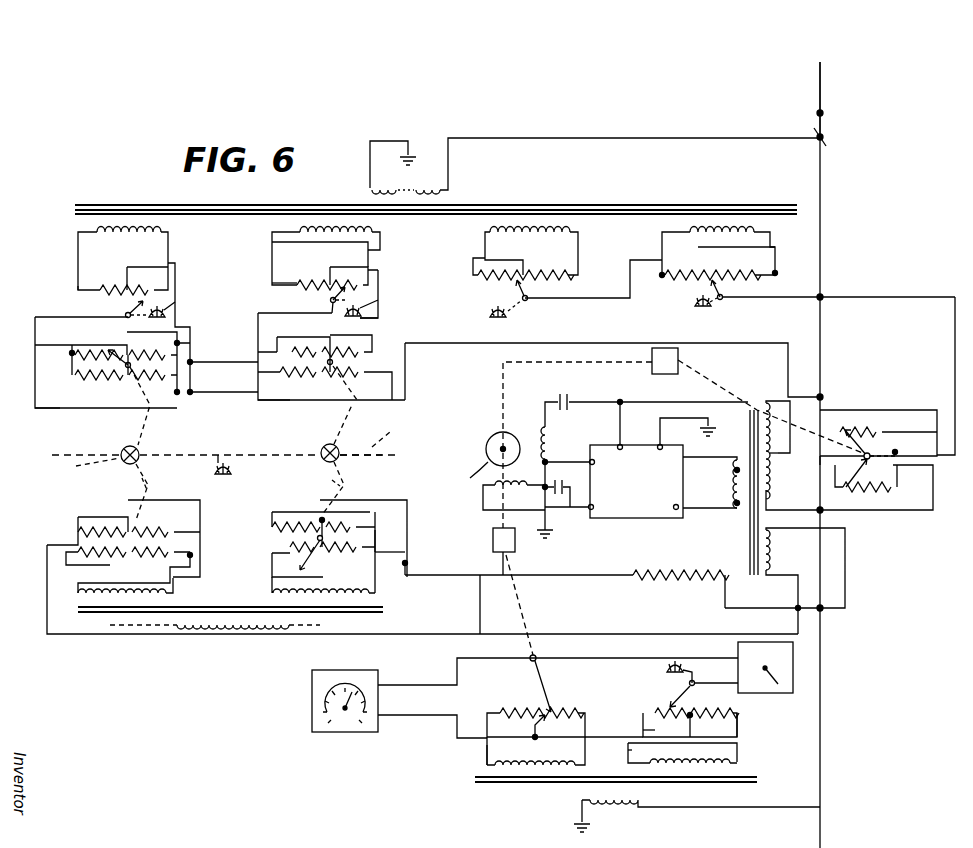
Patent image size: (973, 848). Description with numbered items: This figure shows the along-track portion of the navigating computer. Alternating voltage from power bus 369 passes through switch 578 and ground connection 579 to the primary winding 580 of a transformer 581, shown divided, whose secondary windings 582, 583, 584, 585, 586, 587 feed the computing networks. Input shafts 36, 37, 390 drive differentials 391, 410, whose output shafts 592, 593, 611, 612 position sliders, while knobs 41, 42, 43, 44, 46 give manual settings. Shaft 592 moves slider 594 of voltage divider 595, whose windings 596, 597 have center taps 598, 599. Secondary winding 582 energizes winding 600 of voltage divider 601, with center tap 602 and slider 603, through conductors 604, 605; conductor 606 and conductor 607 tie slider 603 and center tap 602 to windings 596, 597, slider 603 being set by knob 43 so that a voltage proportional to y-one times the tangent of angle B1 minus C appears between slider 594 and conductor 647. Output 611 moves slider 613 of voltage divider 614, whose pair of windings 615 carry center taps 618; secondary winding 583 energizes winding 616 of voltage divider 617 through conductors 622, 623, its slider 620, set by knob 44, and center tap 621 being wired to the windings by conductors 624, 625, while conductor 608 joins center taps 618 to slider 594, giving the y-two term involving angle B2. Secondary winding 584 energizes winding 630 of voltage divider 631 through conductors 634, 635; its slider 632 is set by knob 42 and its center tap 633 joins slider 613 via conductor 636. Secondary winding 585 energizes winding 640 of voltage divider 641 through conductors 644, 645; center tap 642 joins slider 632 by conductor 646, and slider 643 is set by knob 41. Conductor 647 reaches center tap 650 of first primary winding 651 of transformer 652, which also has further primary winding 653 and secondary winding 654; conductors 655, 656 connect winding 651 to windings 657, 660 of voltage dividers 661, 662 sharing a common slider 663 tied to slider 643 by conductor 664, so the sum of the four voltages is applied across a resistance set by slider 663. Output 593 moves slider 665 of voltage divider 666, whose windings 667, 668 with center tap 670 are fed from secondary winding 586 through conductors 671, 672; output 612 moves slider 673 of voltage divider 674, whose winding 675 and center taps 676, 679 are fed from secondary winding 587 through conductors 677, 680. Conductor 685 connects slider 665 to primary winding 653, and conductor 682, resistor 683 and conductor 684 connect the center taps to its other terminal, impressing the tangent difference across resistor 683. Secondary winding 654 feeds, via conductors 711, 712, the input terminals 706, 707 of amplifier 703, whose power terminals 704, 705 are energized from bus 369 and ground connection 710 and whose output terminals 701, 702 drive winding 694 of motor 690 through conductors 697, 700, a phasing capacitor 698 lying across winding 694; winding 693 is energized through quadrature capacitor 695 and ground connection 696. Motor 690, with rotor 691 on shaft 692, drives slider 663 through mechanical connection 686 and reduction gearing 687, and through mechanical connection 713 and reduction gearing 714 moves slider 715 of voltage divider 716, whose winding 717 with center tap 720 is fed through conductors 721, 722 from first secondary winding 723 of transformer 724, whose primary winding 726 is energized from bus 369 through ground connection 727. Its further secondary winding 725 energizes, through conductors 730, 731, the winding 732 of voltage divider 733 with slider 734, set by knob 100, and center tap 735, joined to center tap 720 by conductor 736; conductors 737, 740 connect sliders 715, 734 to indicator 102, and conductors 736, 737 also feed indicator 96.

The ground connection 579 is at (384, 141).
The primary winding 580 is at (372, 182).
The power bus 369 is at (822, 113).
The switch 578 is at (824, 137).
The transformer 581 is at (768, 179).
The secondary winding 582 is at (108, 224).
The secondary winding 583 is at (313, 224).
The secondary winding 584 is at (548, 224).
The secondary winding 585 is at (702, 224).
The secondary winding 586 is at (114, 612).
The secondary winding 587 is at (314, 624).
The output shaft 592 is at (142, 412).
The mechanical output 593 is at (142, 478).
The slider 594 is at (90, 352).
The voltage divider 595 is at (75, 406).
The winding 596 is at (92, 358).
The winding 597 is at (93, 382).
The center tap 598 is at (122, 343).
The center tap 599 is at (128, 382).
The winding 600 is at (78, 290).
The voltage divider 601 is at (186, 287).
The center tap 602 is at (118, 290).
The slider 603 is at (136, 308).
The conductor 604 is at (170, 244).
The conductor 605 is at (78, 236).
The conductor 606 is at (38, 317).
The conductor 607 is at (150, 267).
The conductor 608 is at (285, 335).
The mechanical output 611 is at (342, 428).
The mechanical output 612 is at (332, 480).
The slider 613 is at (336, 425).
The voltage divider 614 is at (271, 402).
The winding 615 is at (258, 370).
The winding 616 is at (318, 274).
The voltage divider 617 is at (281, 272).
The center tap 618 is at (372, 336).
The slider 620 is at (326, 298).
The center tap 621 is at (330, 287).
The conductor 622 is at (272, 240).
The conductor 623 is at (380, 246).
The conductor 624 is at (263, 310).
The conductor 625 is at (398, 358).
The winding 630 is at (546, 272).
The voltage divider 631 is at (510, 285).
The slider 632 is at (530, 298).
The center tap 633 is at (520, 272).
The conductor 634 is at (473, 252).
The conductor 635 is at (578, 250).
The conductor 636 is at (390, 326).
The winding 640 is at (698, 287).
The voltage divider 641 is at (679, 310).
The center tap 642 is at (720, 272).
The slider 643 is at (730, 296).
The conductor 644 is at (666, 232).
The conductor 645 is at (770, 240).
The conductor 646 is at (598, 297).
The conductor 647 is at (642, 343).
The center tap 650 is at (772, 486).
The first primary winding 651 is at (766, 408).
The transformer 652 is at (750, 573).
The further primary winding 653 is at (772, 538).
The secondary winding 654 is at (712, 510).
The conductor 655 is at (845, 410).
The conductor 656 is at (862, 510).
The winding 657 is at (888, 444).
The winding 660 is at (878, 482).
The voltage divider 661 is at (867, 440).
The voltage divider 662 is at (849, 495).
The common slider 663 is at (868, 432).
The conductor 664 is at (950, 325).
The slider 665 is at (100, 515).
The voltage divider 666 is at (60, 532).
The winding 667 is at (158, 512).
The winding 668 is at (80, 545).
The center tap 670 is at (130, 556).
The conductor 671 is at (180, 545).
The conductor 672 is at (100, 607).
The slider 673 is at (290, 547).
The voltage divider 674 is at (387, 528).
The winding 675 is at (300, 520).
The center tap 676 is at (350, 502).
The conductor 677 is at (360, 515).
The center tap 679 is at (322, 552).
The conductor 680 is at (385, 550).
The conductor 682 is at (362, 503).
The resistor 683 is at (645, 580).
The conductor 684 is at (847, 600).
The conductor 685 is at (134, 510).
The mechanical connection 686 is at (772, 455).
The reduction gearing 687 is at (664, 374).
The motor 690 is at (491, 442).
The rotor 691 is at (490, 460).
The shaft 692 is at (505, 364).
The winding 693 is at (545, 425).
The winding 694 is at (494, 486).
The quadrature capacitor 695 is at (569, 402).
The ground connection 696 is at (545, 520).
The conductor 697 is at (548, 462).
The phasing capacitor 698 is at (552, 487).
The conductor 700 is at (493, 548).
The output terminal 701 is at (594, 458).
The output terminal 702 is at (596, 508).
The amplifier 703 is at (612, 518).
The power terminal 704 is at (620, 432).
The power terminal 705 is at (658, 448).
The input terminal 706 is at (686, 466).
The input terminal 707 is at (676, 512).
The ground connection 710 is at (688, 431).
The conductor 711 is at (702, 460).
The conductor 712 is at (708, 512).
The mechanical connection 713 is at (543, 604).
The reduction gearing 714 is at (495, 566).
The slider 715 is at (533, 680).
The voltage divider 716 is at (512, 698).
The winding 717 is at (560, 710).
The center tap 720 is at (533, 730).
The conductor 721 is at (487, 750).
The conductor 722 is at (625, 736).
The first secondary winding 723 is at (533, 765).
The transformer 724 is at (467, 786).
The further secondary winding 725 is at (735, 764).
The primary winding 726 is at (615, 808).
The ground connection 727 is at (580, 802).
The conductor 730 is at (740, 750).
The conductor 731 is at (628, 748).
The winding 732 is at (737, 716).
The voltage divider 733 is at (651, 700).
The slider 734 is at (680, 706).
The center tap 735 is at (690, 725).
The conductor 736 is at (392, 715).
The conductor 737 is at (605, 657).
The conductor 740 is at (706, 730).
The indicator 96 is at (342, 670).
The manual knob 100 is at (684, 668).
The indicator 102 is at (793, 665).
The input shaft 36 is at (88, 464).
The input shaft 37 is at (391, 429).
The manual knob 41 is at (712, 310).
The manual knob 42 is at (508, 312).
The manual knob 43 is at (165, 311).
The manual knob 44 is at (360, 308).
The manual knob 46 is at (228, 478).
The input shaft 390 is at (178, 452).
The differential 391 is at (138, 460).
The differential 410 is at (338, 460).
The first angle input B1 is at (214, 454).
The second angle input B2 is at (371, 456).